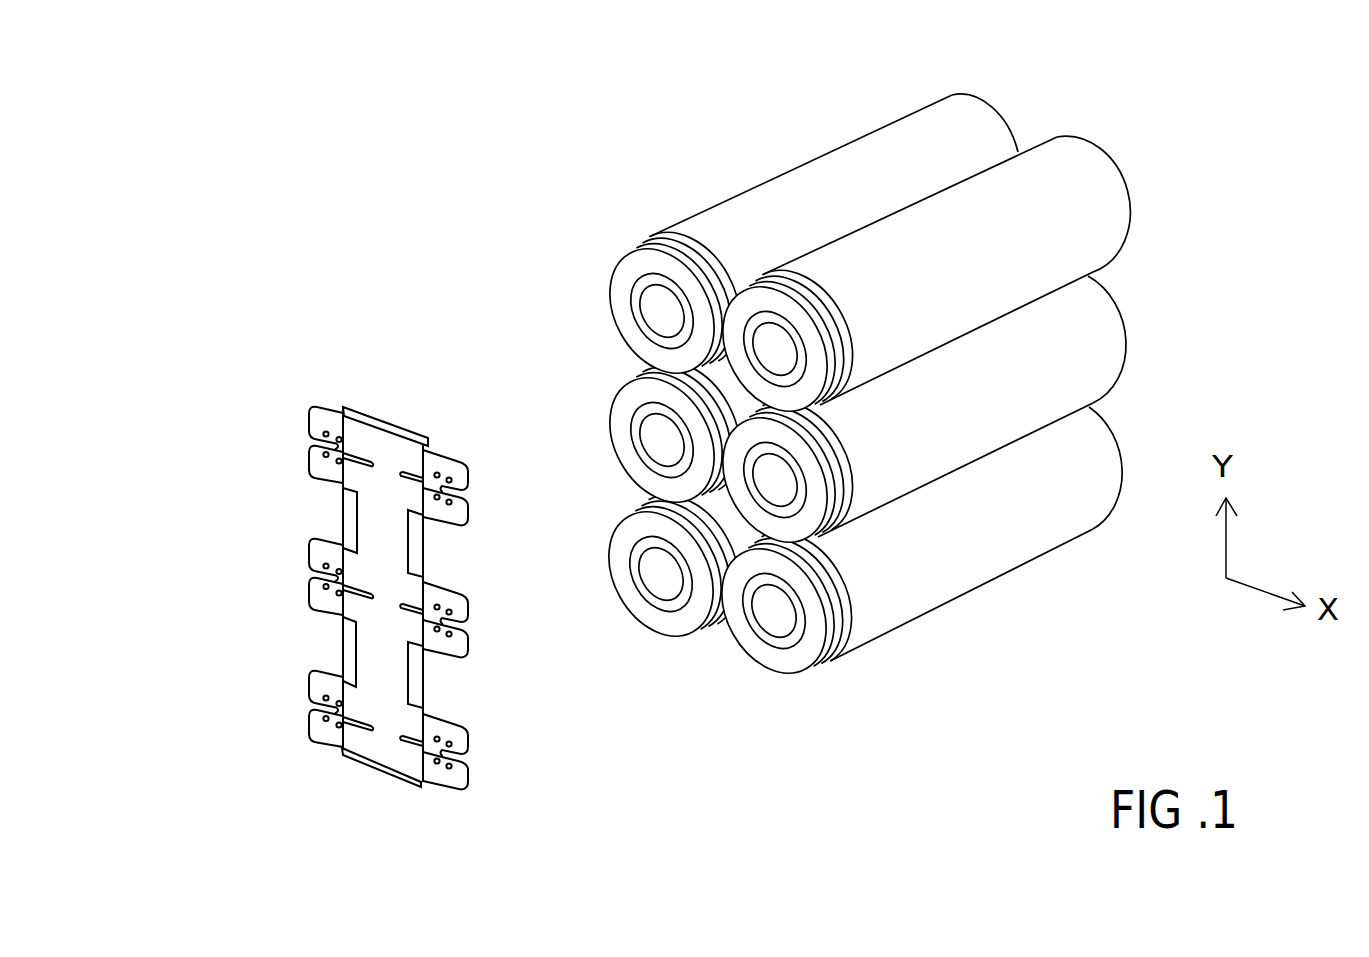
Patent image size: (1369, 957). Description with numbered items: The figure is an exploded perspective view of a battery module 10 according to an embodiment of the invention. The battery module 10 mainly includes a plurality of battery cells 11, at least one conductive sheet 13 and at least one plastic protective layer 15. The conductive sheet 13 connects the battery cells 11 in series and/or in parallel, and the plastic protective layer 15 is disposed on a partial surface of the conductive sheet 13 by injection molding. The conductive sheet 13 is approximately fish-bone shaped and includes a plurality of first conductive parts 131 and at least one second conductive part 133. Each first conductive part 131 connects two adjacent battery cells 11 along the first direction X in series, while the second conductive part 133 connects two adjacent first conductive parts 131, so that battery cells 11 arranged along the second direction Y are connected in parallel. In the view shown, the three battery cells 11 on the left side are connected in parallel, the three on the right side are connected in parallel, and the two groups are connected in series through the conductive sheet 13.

The battery module 10 is at (443, 251).
The battery cell 11 is at (990, 547).
The conductive sheet 13 is at (172, 427).
The first conductive part 131 is at (316, 462).
The second conductive part 133 is at (368, 528).
The plastic protective layer 15 is at (348, 650).